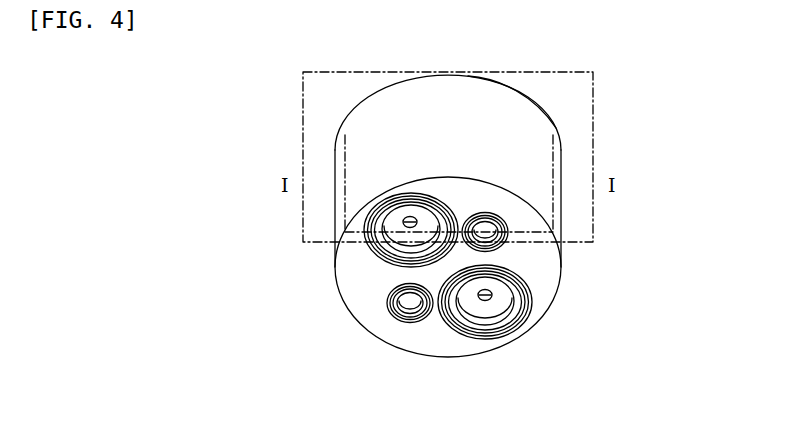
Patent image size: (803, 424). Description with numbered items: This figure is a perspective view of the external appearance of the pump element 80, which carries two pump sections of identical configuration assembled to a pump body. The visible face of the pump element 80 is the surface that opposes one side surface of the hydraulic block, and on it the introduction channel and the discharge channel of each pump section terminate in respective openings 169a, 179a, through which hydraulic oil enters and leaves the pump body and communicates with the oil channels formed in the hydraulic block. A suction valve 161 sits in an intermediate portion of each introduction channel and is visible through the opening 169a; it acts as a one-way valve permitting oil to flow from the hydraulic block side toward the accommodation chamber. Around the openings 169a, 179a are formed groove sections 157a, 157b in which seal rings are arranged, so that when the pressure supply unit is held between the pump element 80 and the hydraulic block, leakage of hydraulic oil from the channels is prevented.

The pump element 80 is at (565, 122).
The groove section 157a is at (399, 265).
The groove section 157b is at (503, 211).
The suction valve 161 is at (400, 217).
The opening 169a is at (380, 254).
The opening 179a is at (503, 250).